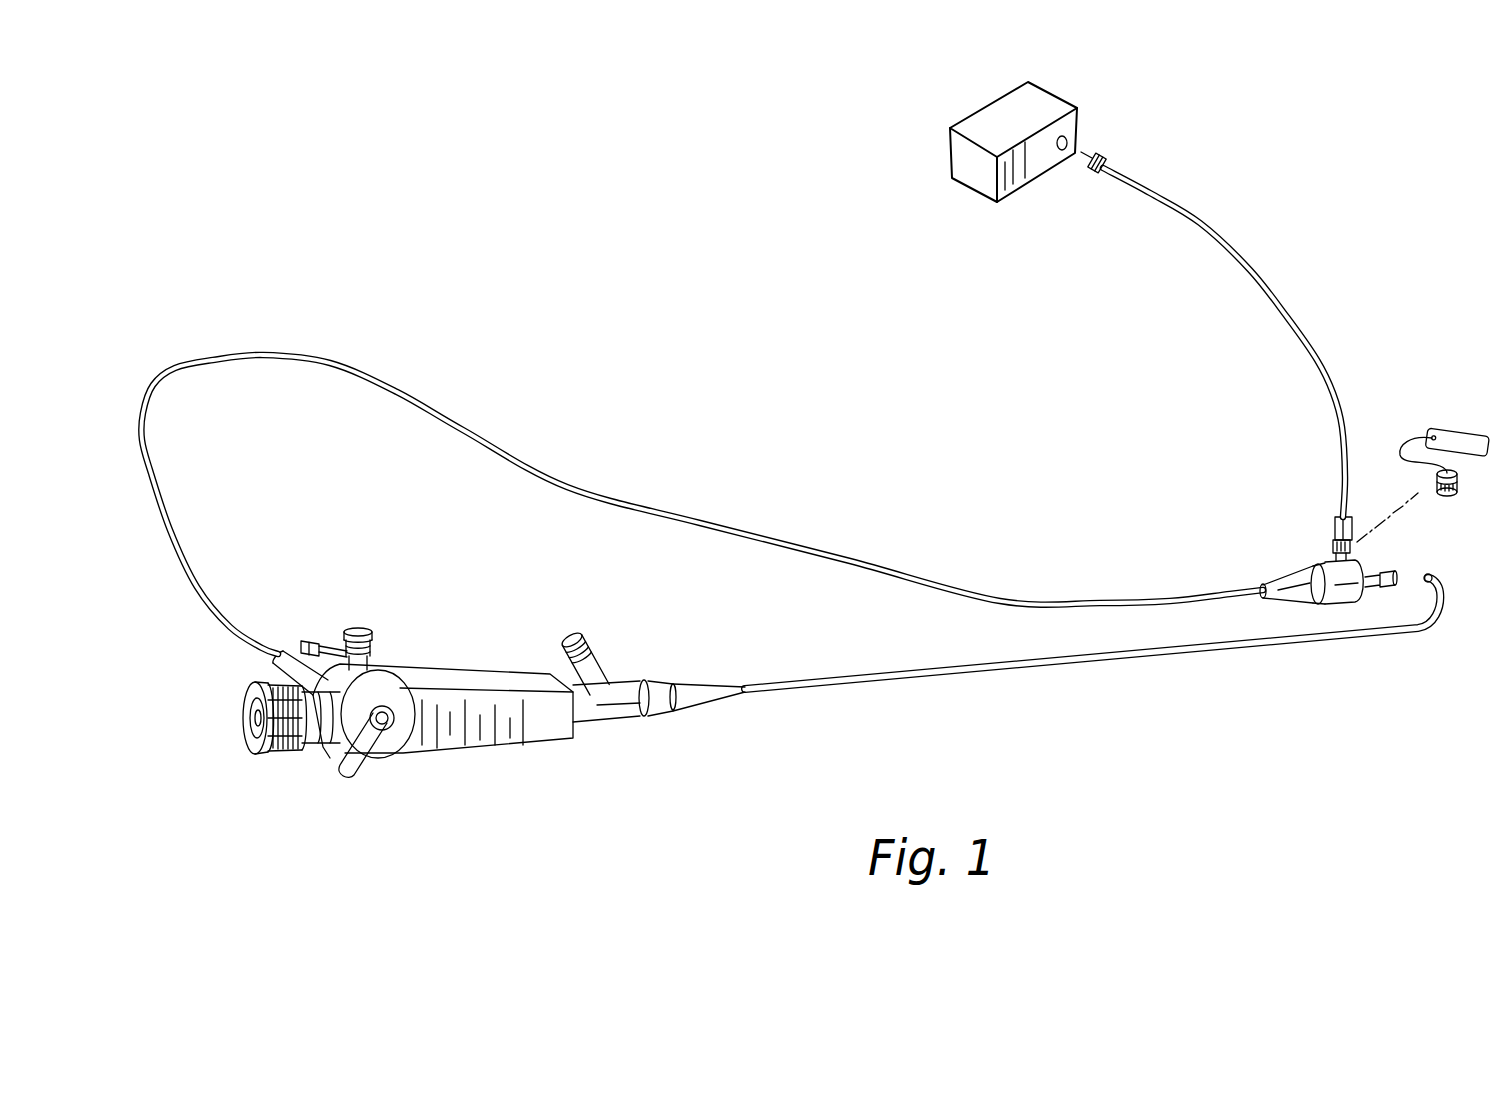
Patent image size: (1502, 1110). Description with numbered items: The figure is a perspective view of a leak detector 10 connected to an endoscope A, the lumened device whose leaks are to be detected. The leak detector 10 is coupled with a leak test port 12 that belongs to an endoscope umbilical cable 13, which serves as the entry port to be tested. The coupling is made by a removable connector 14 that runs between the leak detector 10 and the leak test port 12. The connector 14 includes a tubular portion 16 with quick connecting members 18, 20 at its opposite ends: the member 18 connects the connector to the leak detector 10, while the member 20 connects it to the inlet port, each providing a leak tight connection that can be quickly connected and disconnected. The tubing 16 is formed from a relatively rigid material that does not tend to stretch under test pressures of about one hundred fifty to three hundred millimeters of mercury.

The leak detector 10 is at (951, 157).
The quick connecting member 18 is at (1105, 157).
The removable connector 14 is at (1265, 294).
The tubular portion 16 is at (1344, 414).
The quick connecting member 20 is at (1335, 525).
The leak test port 12 is at (1334, 547).
The endoscope umbilical cable 13 is at (880, 562).
The endoscope A is at (1017, 666).